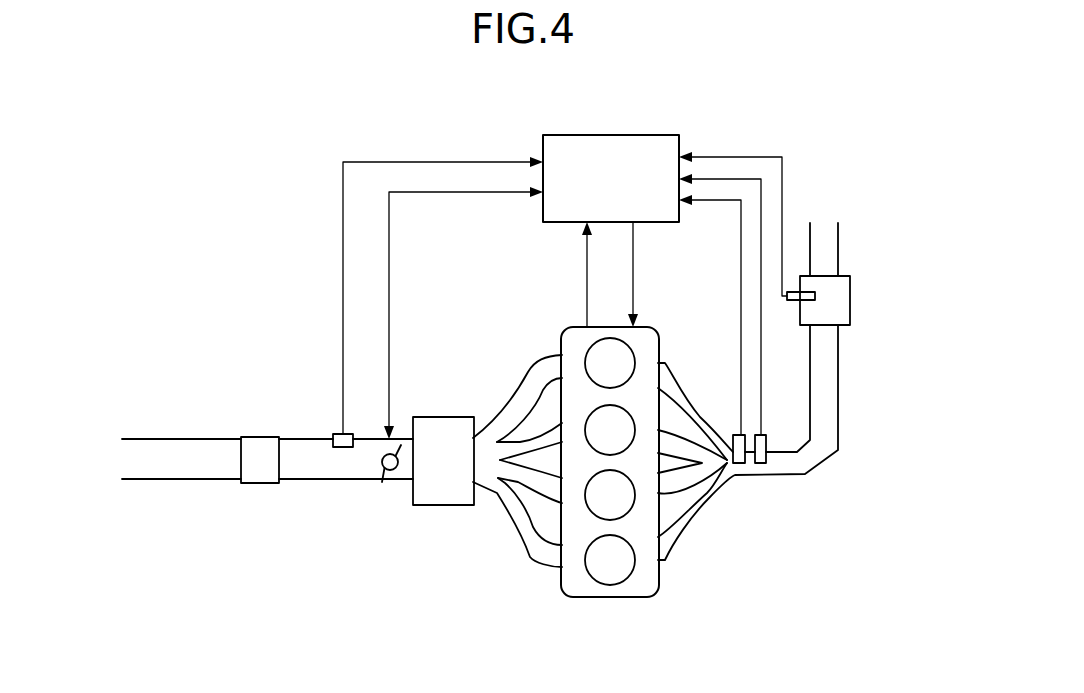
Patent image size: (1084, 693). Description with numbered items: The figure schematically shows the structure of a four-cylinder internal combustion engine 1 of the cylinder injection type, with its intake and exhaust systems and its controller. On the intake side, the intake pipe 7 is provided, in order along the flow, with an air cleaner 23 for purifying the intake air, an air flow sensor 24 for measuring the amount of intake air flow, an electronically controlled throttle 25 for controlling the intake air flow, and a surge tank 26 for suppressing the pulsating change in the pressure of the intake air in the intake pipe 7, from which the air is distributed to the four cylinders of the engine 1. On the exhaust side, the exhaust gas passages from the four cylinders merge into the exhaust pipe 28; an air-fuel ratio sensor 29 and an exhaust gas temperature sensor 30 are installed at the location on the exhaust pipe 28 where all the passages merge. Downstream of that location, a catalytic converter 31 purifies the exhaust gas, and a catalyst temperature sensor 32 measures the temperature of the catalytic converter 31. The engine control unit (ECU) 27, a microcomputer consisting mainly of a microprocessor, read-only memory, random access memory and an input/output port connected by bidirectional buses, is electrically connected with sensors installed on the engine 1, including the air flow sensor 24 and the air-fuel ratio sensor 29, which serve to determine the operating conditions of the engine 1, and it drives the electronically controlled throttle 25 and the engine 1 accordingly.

The cylinder injection type internal combustion engine 1 is at (610, 597).
The intake pipe 7 is at (207, 439).
The air cleaner 23 is at (262, 484).
The air flow sensor 24 is at (336, 433).
The electronically controlled throttle 25 is at (382, 482).
The surge tank 26 is at (445, 506).
The engine control unit (ECU) 27 is at (610, 135).
The exhaust pipe 28 is at (822, 460).
The air-fuel ratio sensor 29 is at (740, 463).
The exhaust gas temperature sensor 30 is at (761, 463).
The catalytic converter 31 is at (850, 297).
The catalyst temperature sensor 32 is at (793, 290).